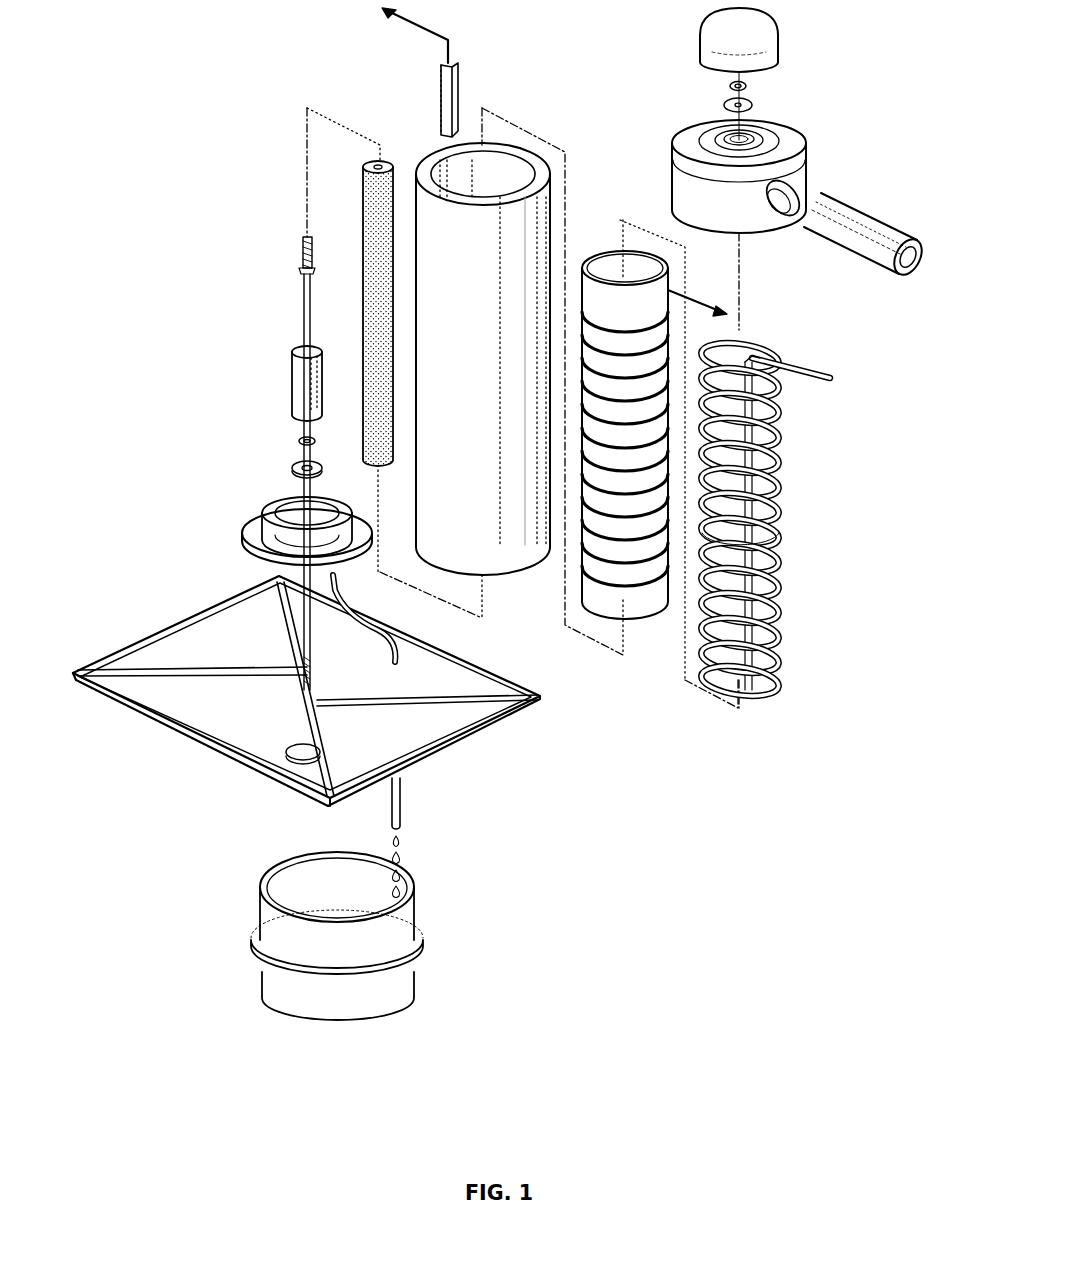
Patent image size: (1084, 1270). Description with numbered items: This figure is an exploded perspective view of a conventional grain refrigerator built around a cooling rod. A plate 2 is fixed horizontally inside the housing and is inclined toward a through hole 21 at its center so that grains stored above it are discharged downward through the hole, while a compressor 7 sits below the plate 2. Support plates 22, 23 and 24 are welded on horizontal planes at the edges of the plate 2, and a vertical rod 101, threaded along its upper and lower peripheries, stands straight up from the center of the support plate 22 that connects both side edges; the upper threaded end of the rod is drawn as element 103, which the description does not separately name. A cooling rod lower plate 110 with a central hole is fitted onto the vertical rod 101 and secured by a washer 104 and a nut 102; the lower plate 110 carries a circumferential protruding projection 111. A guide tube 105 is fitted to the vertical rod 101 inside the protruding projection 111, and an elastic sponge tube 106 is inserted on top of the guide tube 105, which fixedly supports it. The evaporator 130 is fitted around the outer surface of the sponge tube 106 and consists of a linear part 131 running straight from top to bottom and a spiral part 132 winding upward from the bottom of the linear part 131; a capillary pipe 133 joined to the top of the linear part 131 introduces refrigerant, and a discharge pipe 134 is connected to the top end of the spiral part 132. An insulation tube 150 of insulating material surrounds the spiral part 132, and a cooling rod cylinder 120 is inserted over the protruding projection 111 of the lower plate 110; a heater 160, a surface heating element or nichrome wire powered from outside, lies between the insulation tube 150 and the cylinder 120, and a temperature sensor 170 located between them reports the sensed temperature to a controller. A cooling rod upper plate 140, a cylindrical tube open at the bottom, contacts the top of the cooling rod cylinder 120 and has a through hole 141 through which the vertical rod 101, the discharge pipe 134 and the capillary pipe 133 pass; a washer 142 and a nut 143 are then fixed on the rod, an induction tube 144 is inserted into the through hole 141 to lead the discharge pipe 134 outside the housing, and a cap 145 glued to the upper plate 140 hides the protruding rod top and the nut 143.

The plate 2 is at (316, 736).
The compressor 7 is at (400, 915).
The through hole 21 is at (303, 753).
The support plate 22 is at (270, 614).
The support plate 23 is at (160, 674).
The support plate 24 is at (473, 703).
The vertical rod 101 is at (302, 293).
The nut 102 is at (299, 440).
The threaded portion 103 is at (300, 256).
The washer 104 is at (292, 466).
The guide tube 105 is at (294, 379).
The sponge tube 106 is at (363, 193).
The cooling rod lower plate 110 is at (250, 537).
The protruding projection 111 is at (270, 512).
The cooling rod cylinder 120 is at (432, 162).
The evaporator 130 is at (768, 519).
The linear part 131 is at (752, 640).
The spiral part 132 is at (777, 535).
The capillary pipe 133 is at (800, 368).
The discharge pipe 134 is at (770, 348).
The cooling rod upper plate 140 is at (781, 143).
The through hole 141 is at (796, 192).
The washer 142 is at (722, 105).
The nut 143 is at (728, 85).
The induction tube 144 is at (868, 222).
The cap 145 is at (770, 50).
The insulation tube 150 is at (654, 447).
The heater 160 is at (632, 587).
The temperature sensor 170 is at (455, 95).